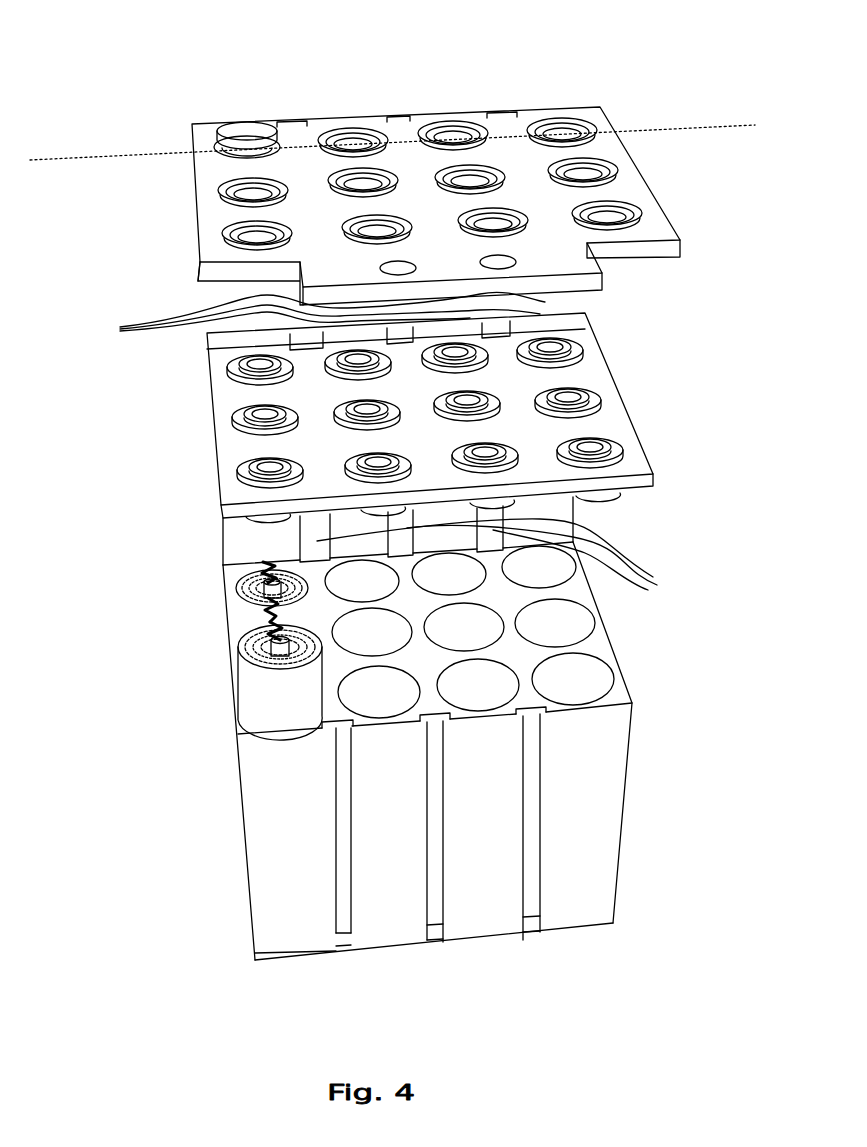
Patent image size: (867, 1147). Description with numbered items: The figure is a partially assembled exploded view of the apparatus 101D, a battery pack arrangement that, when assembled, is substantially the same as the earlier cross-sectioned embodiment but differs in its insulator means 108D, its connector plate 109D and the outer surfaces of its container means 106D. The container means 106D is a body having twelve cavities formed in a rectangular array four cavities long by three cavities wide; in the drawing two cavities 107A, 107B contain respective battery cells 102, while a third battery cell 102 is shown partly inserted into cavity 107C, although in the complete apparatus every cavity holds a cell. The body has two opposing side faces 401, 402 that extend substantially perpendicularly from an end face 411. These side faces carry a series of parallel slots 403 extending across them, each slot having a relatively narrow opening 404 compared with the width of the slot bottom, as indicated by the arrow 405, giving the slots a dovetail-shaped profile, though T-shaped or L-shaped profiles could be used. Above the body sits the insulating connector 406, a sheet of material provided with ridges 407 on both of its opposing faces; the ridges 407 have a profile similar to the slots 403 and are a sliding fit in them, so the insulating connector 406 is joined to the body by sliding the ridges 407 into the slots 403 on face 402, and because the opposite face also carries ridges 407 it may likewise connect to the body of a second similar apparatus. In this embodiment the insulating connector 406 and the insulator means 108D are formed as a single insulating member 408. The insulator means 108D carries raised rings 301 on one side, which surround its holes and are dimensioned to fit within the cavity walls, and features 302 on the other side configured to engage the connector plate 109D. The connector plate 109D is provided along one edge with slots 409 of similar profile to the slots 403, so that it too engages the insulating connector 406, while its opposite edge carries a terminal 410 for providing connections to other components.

The apparatus 101D is at (682, 60).
The connector plate 109D is at (683, 244).
The terminal 410 is at (340, 275).
The slots 409 is at (500, 113).
The ridges 407 is at (387, 442).
The insulator means 108D is at (657, 482).
The insulating member 408 is at (222, 372).
The features 302 is at (597, 398).
The raised rings 301 is at (610, 503).
The side face 401 is at (603, 793).
The insulating connector 406 is at (236, 536).
The side face 402 is at (239, 551).
The container means 106D is at (600, 876).
The arrow 405 is at (360, 757).
The opening 404 is at (352, 993).
The end face 411 is at (496, 954).
The slots 403 is at (327, 578).
The battery cells 102 is at (272, 712).
The cavity 107A is at (240, 605).
The cavity 107B is at (240, 628).
The cavity 107C is at (265, 706).